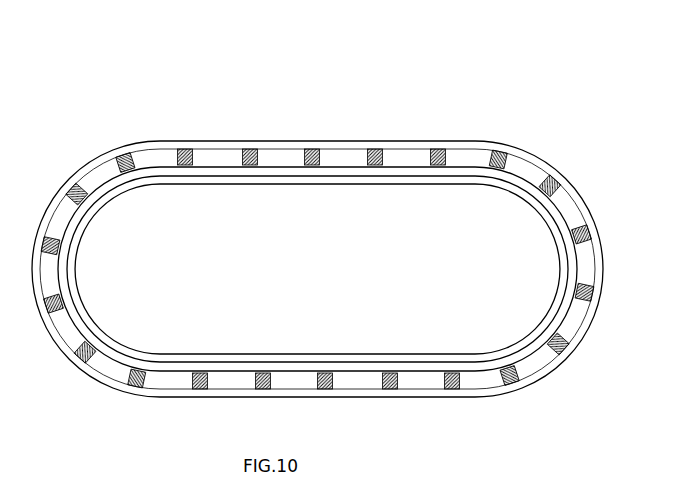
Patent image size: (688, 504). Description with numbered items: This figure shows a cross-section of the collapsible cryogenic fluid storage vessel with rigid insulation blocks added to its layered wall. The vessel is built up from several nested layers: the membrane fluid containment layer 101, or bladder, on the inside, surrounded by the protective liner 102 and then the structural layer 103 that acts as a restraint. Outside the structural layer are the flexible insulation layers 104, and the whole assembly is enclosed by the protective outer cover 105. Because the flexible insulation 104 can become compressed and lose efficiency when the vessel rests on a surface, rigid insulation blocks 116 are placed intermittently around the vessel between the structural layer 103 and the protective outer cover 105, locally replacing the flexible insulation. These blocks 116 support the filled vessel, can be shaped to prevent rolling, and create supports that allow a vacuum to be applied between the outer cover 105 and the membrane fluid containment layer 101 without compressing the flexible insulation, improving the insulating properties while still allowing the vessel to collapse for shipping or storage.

The membrane fluid containment layer 101 is at (500, 183).
The protective liner 102 is at (447, 175).
The structural layer 103 is at (392, 167).
The insulation layers 104 is at (338, 154).
The protective outer cover 105 is at (275, 141).
The rigid insulation blocks 116 is at (508, 383).